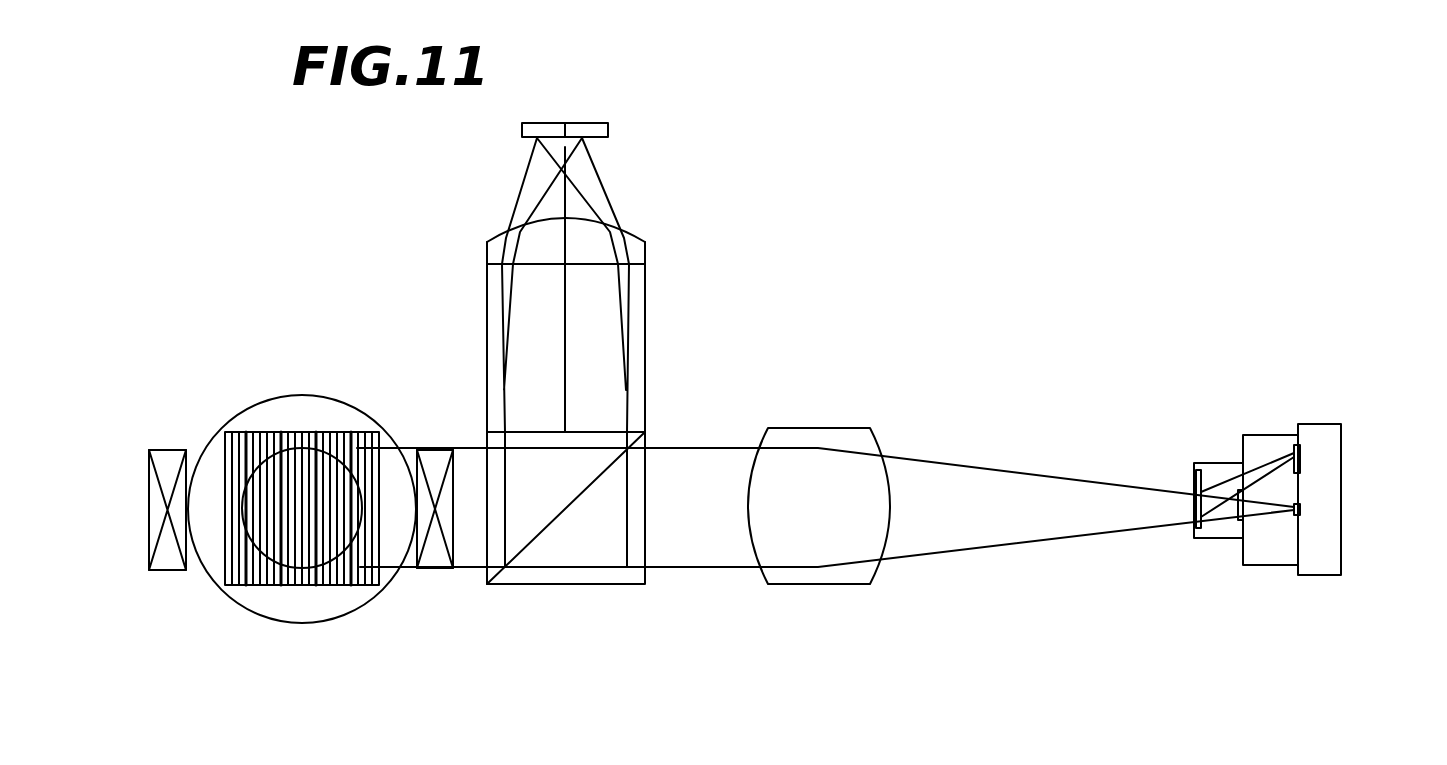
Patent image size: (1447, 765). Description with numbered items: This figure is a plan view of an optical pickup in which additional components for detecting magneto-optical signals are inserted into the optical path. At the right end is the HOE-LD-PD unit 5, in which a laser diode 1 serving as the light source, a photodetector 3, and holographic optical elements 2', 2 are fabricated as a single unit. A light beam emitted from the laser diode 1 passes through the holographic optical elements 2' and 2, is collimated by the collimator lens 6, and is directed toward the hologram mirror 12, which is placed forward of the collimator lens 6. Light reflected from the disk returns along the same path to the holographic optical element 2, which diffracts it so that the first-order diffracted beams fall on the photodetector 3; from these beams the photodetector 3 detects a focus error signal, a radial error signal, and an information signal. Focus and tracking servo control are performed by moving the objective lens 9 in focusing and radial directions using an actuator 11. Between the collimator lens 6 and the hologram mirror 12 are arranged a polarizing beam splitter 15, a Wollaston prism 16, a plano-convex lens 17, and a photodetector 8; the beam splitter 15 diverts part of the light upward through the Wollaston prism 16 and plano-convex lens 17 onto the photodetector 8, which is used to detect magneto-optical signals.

The laser diode 1 is at (1300, 506).
The holographic optical element 2 is at (1177, 441).
The holographic optical element 2' is at (1219, 595).
The photodetector 3 is at (1295, 441).
The HOE-LD-PD unit 5 is at (1158, 327).
The collimator lens 6 is at (805, 584).
The photodetector 8 is at (586, 123).
The objective lens 9 is at (327, 614).
The actuator 11 is at (165, 570).
The hologram mirror 12 is at (252, 585).
The polarizing beam splitter 15 is at (568, 584).
The Wollaston prism 16 is at (641, 322).
The plano-convex lens 17 is at (632, 240).